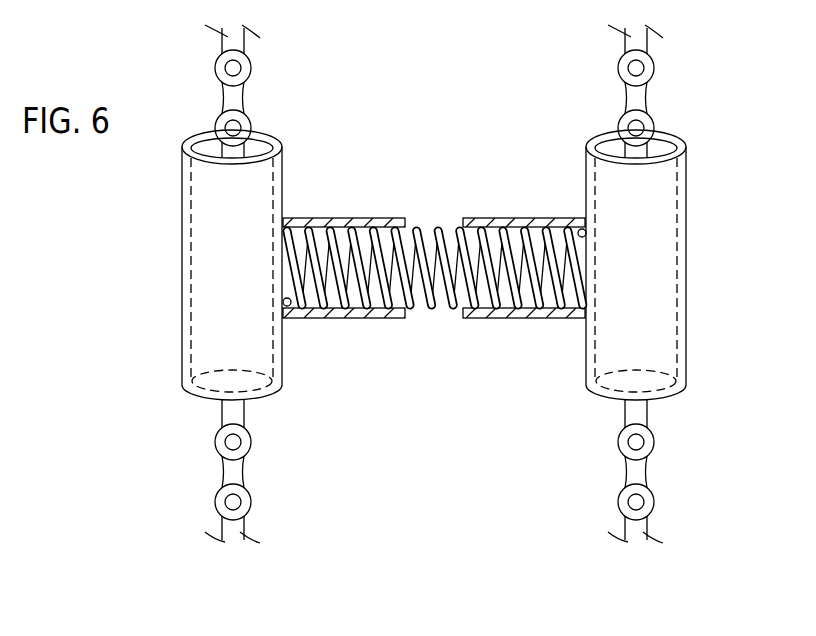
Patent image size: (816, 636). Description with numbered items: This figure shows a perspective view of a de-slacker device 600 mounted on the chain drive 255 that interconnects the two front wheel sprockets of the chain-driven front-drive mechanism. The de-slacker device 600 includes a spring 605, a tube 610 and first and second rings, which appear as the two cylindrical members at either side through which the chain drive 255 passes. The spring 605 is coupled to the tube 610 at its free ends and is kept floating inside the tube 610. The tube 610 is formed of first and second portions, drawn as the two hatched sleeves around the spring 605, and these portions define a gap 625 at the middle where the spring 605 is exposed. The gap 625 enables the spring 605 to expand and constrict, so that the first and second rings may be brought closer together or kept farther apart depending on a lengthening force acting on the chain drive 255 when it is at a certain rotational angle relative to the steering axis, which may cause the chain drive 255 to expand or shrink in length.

The chain drive 255 is at (259, 86).
The de-slacker device 600 is at (434, 257).
The spring 605 is at (434, 279).
The tube 610 is at (434, 262).
The gap 625 is at (435, 330).